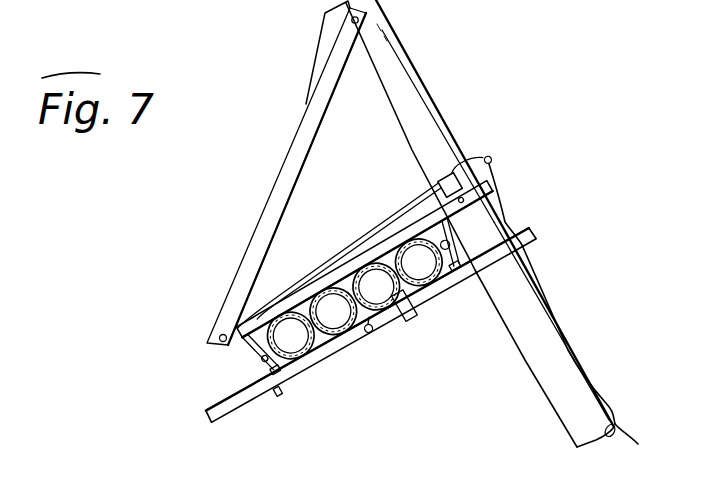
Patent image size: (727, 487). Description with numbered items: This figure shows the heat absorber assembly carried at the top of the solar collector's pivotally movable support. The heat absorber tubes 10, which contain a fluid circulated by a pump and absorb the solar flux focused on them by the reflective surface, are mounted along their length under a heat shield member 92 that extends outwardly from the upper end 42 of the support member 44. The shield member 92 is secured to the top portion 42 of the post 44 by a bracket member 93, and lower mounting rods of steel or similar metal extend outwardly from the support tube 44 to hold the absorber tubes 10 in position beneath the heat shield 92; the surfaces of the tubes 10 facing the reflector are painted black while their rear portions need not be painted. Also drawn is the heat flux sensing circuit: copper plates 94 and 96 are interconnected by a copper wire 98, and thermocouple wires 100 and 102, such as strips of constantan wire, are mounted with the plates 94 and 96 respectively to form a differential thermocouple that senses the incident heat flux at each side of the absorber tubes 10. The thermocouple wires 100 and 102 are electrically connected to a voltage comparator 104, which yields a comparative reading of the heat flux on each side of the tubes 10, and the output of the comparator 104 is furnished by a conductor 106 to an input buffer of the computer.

The absorber tubes 10 is at (327, 348).
The upper end 42 is at (388, 64).
The support member 44 is at (553, 387).
The heat shield member 92 is at (347, 264).
The bracket member and lower mounting rods 93 is at (291, 161).
The copper plate 94 is at (213, 410).
The copper plate 96 is at (403, 316).
The copper wire 98 is at (370, 331).
The thermocouple wire 100 is at (287, 386).
The thermocouple wire 102 is at (457, 268).
The voltage comparator 104 is at (441, 178).
The conductor 106 is at (567, 312).